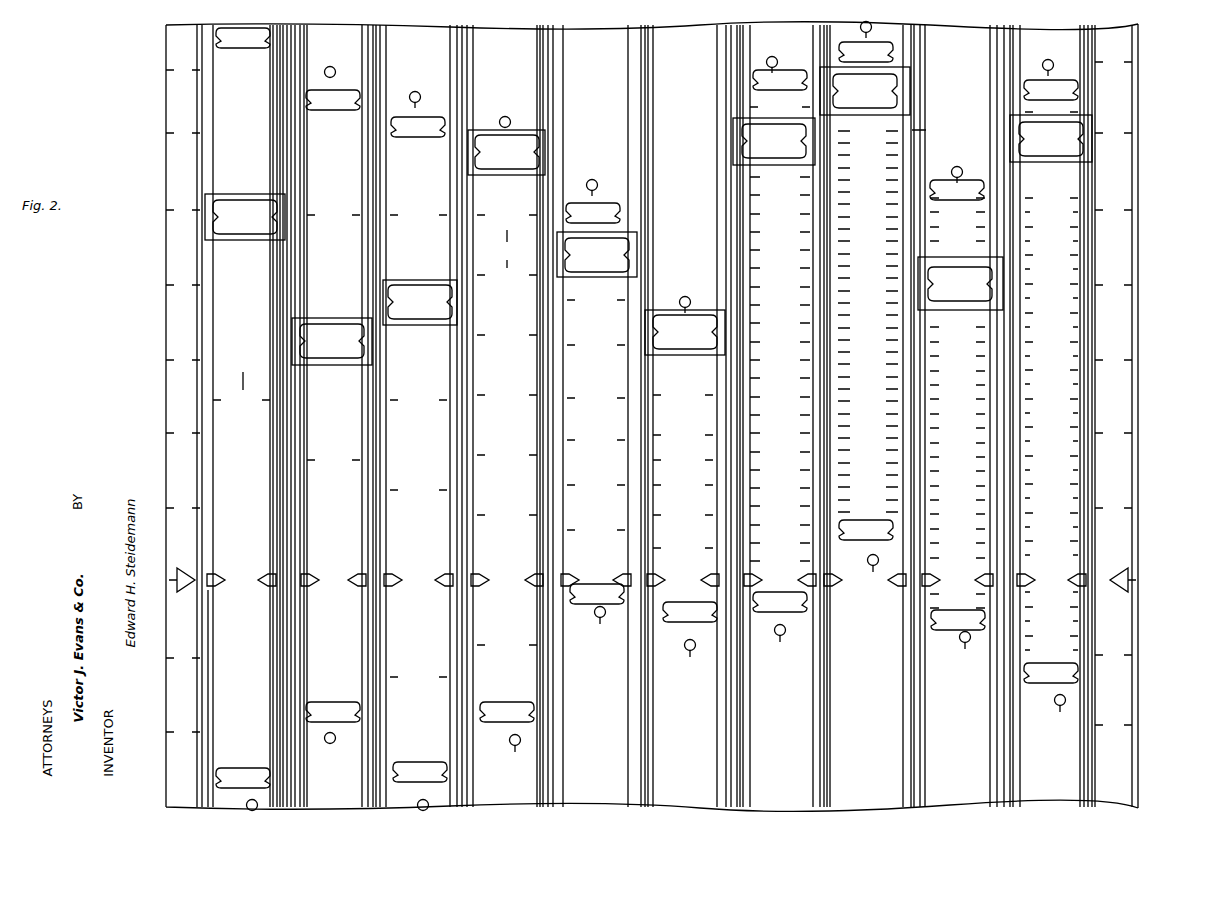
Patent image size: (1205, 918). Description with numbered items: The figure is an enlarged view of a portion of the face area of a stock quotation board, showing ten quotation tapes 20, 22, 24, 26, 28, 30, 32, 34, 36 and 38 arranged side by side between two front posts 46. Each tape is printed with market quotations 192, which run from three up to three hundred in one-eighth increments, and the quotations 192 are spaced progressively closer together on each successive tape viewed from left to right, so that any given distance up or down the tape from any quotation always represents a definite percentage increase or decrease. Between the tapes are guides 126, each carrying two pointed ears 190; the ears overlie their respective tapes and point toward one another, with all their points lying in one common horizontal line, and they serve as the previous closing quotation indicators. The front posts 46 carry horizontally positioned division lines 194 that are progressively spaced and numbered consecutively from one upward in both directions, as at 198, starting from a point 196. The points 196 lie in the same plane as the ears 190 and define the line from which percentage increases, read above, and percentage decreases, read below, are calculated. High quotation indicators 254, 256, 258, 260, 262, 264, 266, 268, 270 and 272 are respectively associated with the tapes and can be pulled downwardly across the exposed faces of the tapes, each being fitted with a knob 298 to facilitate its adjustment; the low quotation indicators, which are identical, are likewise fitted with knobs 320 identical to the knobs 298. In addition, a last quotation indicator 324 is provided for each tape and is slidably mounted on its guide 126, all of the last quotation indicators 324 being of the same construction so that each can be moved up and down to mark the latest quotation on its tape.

The quotation tape 20 is at (222, 590).
The quotation tape 22 is at (299, 465).
The quotation tape 24 is at (383, 449).
The quotation tape 26 is at (473, 465).
The quotation tape 28 is at (565, 449).
The quotation tape 30 is at (654, 547).
The quotation tape 32 is at (802, 393).
The quotation tape 34 is at (891, 389).
The quotation tape 36 is at (981, 475).
The quotation tape 38 is at (882, 393).
The front post 46 is at (640, 417).
The guide 126 is at (597, 416).
The pointed ear 190 is at (646, 578).
The market quotation 192 is at (678, 309).
The division line 194 is at (641, 416).
The point 196 is at (672, 567).
The numbering of division lines 198 is at (671, 406).
The high quotation indicator 254 is at (189, 38).
The high quotation indicator 256 is at (265, 416).
The high quotation indicator 258 is at (349, 113).
The high quotation indicator 260 is at (373, 416).
The high quotation indicator 262 is at (537, 416).
The high quotation indicator 264 is at (625, 416).
The high quotation indicator 266 is at (710, 416).
The high quotation indicator 268 is at (899, 415).
The high quotation indicator 270 is at (1059, 416).
The high quotation indicator 272 is at (1133, 416).
The knob 298 is at (723, 174).
The knob 320 is at (626, 683).
The last quotation indicator 324 is at (691, 216).